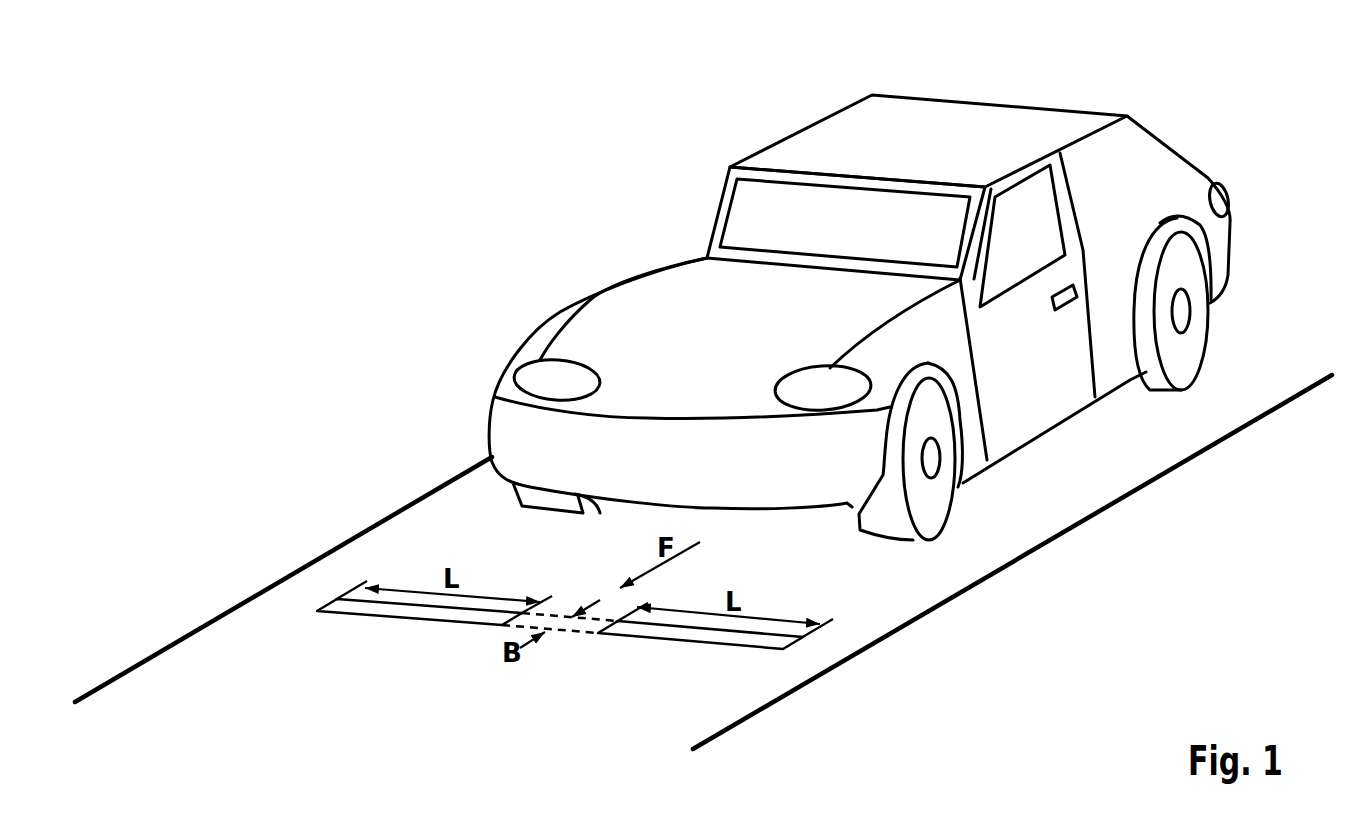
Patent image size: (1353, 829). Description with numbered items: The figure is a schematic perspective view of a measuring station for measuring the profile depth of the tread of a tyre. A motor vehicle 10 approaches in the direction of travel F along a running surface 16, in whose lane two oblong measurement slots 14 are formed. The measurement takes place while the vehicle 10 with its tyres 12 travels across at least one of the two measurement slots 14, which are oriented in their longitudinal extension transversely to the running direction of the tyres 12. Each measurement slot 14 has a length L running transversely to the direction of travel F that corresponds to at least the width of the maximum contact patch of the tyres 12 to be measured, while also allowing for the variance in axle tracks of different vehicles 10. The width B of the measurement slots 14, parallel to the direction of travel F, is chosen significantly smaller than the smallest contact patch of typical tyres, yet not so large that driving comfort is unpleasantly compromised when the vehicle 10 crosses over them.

The motor vehicle 10 is at (1190, 115).
The tyre 12 is at (1182, 357).
The measurement slot 14 is at (420, 614).
The running surface 16 is at (945, 590).